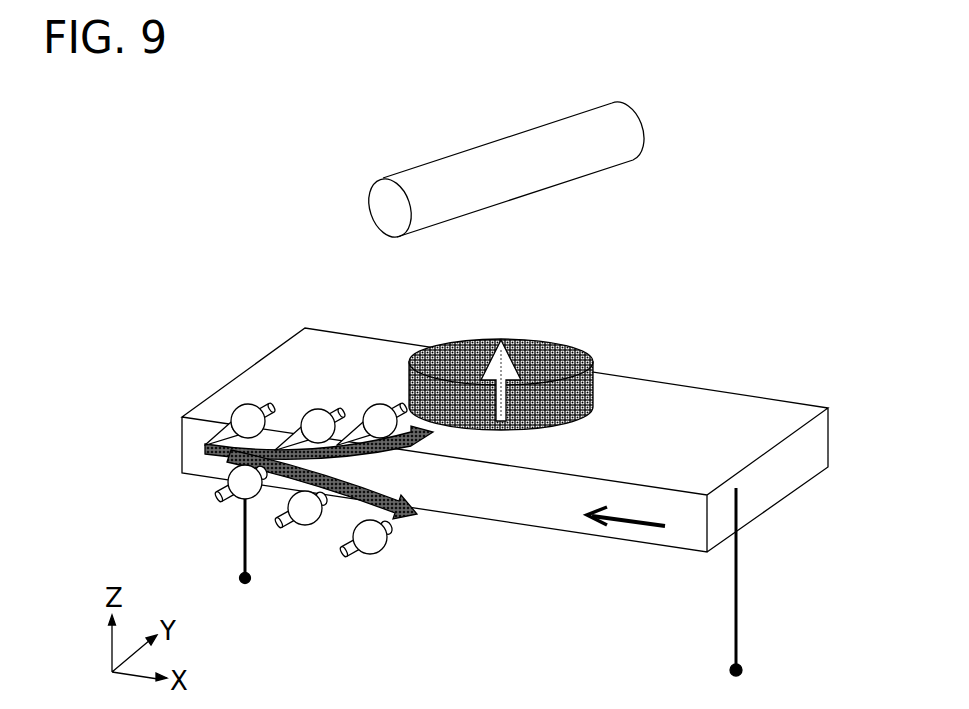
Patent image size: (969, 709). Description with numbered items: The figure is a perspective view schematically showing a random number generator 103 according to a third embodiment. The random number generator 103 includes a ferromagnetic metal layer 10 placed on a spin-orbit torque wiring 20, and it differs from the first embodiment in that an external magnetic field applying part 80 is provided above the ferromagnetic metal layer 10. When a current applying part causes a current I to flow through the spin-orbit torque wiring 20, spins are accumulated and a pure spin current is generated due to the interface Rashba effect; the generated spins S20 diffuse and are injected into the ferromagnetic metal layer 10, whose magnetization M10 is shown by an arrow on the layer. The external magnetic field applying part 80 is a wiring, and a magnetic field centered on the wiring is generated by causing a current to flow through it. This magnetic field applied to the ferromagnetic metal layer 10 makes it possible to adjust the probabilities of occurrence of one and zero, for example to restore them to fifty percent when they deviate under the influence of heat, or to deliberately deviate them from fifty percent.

The external magnetic field applying part 80 is at (445, 177).
The random number generator 103 is at (790, 170).
The ferromagnetic metal layer 10 is at (551, 343).
The spin-orbit torque wiring 20 is at (505, 492).
The magnetization of ferromagnetic layer 10 M10 is at (504, 360).
The spins S20 is at (315, 433).
The current I is at (618, 525).